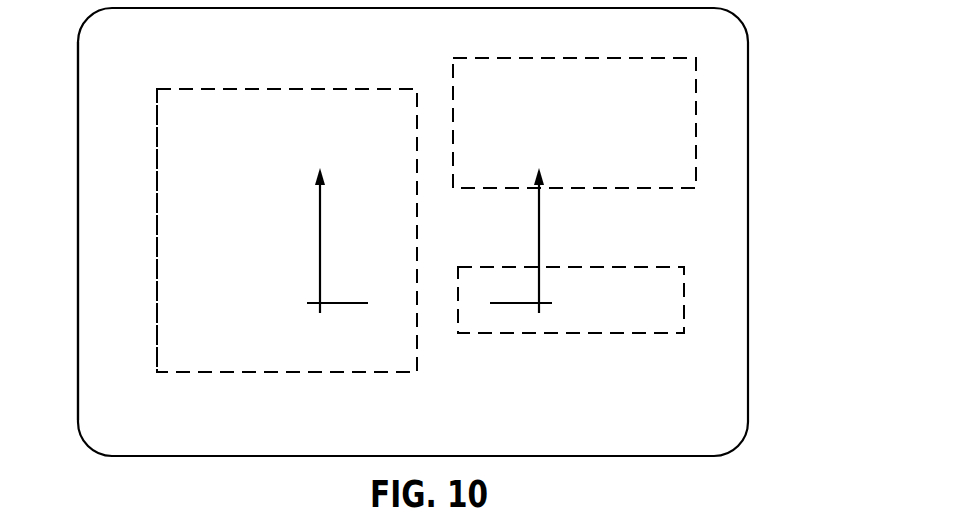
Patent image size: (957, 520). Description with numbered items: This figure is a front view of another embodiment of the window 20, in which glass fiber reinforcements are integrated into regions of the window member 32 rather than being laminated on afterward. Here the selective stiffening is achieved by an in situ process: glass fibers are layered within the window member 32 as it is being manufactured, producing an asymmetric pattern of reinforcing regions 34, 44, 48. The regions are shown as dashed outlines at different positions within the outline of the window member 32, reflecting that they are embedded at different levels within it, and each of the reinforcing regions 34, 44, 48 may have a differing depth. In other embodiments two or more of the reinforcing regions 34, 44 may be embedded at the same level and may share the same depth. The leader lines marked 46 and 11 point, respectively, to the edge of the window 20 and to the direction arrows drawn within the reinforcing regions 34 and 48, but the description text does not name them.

The window 20 is at (767, 92).
The housing 46 is at (120, 113).
The window member 32 is at (110, 366).
The reinforcing region 34 is at (178, 230).
The reinforcing region 44 is at (662, 126).
The reinforcing region 48 is at (662, 309).
The direction arrow 11 is at (430, 219).